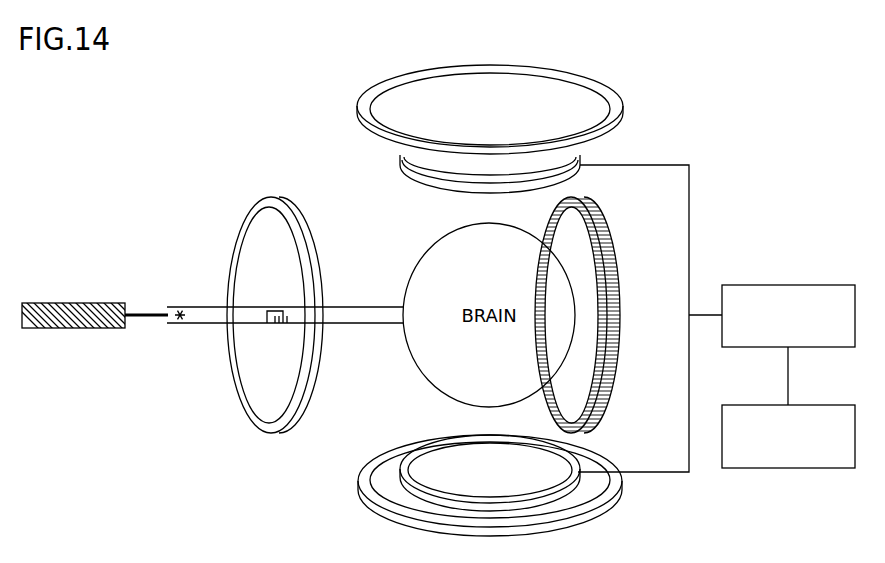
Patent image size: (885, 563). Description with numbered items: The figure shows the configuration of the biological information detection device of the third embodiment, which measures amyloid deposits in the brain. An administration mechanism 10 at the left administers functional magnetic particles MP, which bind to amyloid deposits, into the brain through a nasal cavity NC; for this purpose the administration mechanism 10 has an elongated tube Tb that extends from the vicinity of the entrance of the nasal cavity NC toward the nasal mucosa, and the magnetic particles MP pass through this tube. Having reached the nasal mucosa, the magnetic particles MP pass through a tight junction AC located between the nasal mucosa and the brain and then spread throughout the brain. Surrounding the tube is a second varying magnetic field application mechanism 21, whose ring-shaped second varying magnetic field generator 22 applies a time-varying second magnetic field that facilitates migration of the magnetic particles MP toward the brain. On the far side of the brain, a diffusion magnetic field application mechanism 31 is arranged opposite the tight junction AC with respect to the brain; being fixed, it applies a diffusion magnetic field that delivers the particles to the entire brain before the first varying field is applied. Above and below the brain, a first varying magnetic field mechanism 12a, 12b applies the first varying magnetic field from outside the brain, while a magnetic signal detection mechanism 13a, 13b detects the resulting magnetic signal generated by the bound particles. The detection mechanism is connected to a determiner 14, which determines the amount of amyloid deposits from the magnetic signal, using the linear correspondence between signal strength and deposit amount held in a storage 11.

The administration mechanism 10 is at (72, 329).
The magnetic particles MP is at (146, 303).
The tube Tb is at (137, 317).
The nasal cavity NC is at (177, 325).
The tight junction AC is at (277, 325).
The second varying magnetic field application mechanism 21 is at (229, 193).
The second varying magnetic field generator 22 is at (247, 228).
The diffusion magnetic field application mechanism 31 is at (612, 242).
The first varying magnetic field mechanism 12a is at (607, 97).
The magnetic signal detection mechanism 13a is at (560, 183).
The magnetic signal detection mechanism 13b is at (573, 455).
The first varying magnetic field mechanism 12b is at (610, 505).
The determiner 14 is at (810, 283).
The storage 11 is at (810, 403).